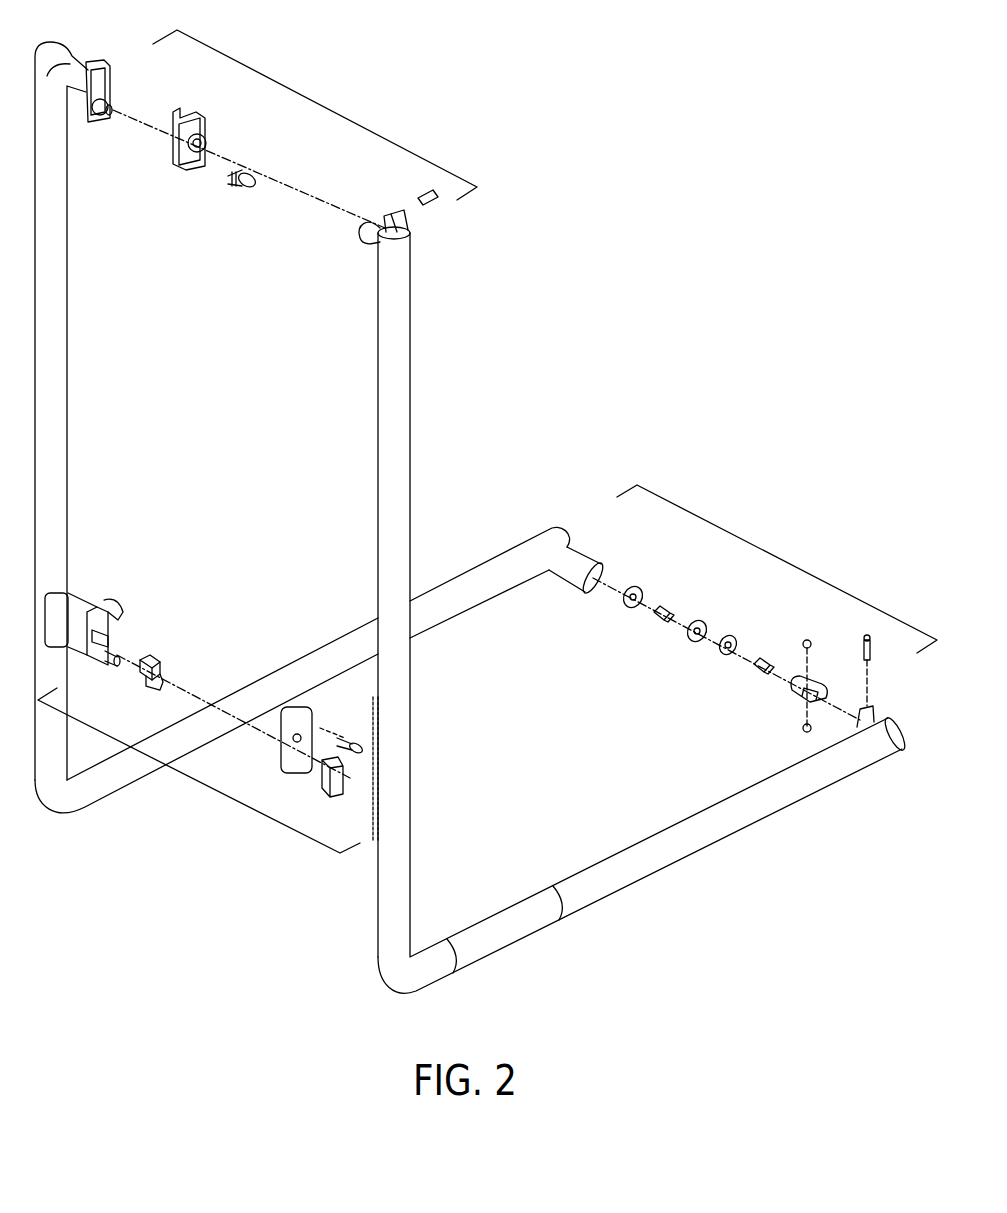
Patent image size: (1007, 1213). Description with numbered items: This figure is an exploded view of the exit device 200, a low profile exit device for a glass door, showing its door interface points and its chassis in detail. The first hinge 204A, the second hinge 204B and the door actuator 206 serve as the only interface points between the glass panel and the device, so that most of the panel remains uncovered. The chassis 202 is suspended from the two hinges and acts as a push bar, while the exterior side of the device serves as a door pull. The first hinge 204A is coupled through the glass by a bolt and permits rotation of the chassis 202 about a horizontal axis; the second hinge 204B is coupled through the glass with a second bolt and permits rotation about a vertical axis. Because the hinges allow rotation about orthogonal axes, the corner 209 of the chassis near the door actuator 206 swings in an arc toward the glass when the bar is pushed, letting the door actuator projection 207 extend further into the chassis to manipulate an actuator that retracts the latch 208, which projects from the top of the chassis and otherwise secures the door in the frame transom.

The exit device 200 is at (486, 534).
The chassis 202 is at (615, 632).
The first hinge 204A is at (325, 112).
The second hinge 204B is at (788, 565).
The door actuator 206 is at (188, 777).
The door actuator projection 207 is at (312, 770).
The latch 208 is at (410, 231).
The corner 209 is at (397, 958).